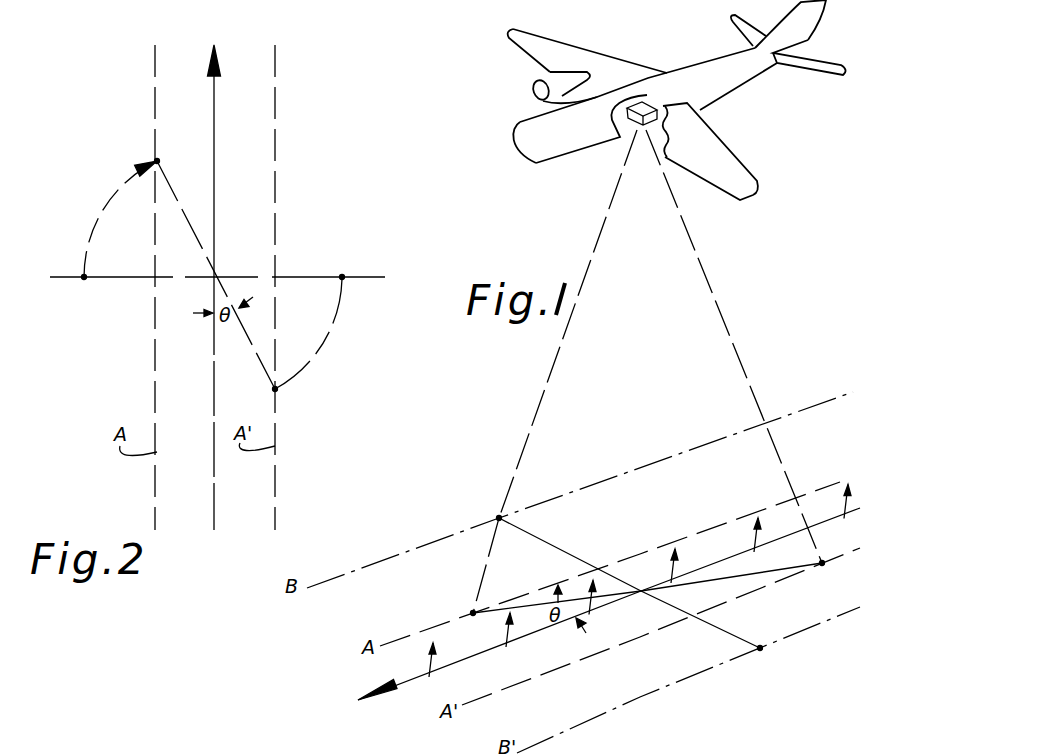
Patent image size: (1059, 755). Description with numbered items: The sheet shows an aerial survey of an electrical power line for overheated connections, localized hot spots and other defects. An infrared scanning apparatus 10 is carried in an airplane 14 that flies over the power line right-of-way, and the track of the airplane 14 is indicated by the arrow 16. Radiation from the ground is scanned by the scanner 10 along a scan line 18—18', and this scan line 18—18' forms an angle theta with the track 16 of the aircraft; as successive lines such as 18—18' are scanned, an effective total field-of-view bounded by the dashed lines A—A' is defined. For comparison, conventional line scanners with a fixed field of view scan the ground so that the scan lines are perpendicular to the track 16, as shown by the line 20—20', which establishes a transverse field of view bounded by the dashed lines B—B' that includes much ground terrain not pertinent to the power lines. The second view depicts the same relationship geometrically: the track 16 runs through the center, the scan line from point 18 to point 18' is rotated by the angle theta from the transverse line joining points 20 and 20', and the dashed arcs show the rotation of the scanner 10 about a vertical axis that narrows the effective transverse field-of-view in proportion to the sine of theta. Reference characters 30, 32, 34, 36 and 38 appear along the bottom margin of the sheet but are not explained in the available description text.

In FIG. 1, the infrared scanning apparatus 10 is at (627, 114).
In FIG. 1, the airplane 14 is at (663, 72).
In FIG. 2, the track of the airplane 16 is at (214, 95).
In FIG. 1, the track of the airplane 16 is at (397, 686).
In FIG. 2, the scan line end point 18 is at (130, 121).
In FIG. 1, the scan line end point 18 is at (442, 600).
In FIG. 2, the scan line end point 18' is at (310, 410).
In FIG. 1, the scan line end point 18' is at (820, 584).
In FIG. 2, the transverse scan line end point 20 is at (60, 297).
In FIG. 1, the transverse scan line end point 20 is at (467, 489).
In FIG. 2, the transverse scan line end point 20' is at (368, 256).
In FIG. 1, the transverse scan line end point 20' is at (785, 664).
In FIG. 1, the component 30 is at (107, 750).
In FIG. 1, the component 32 is at (738, 753).
In FIG. 1, the component 34 is at (300, 750).
In FIG. 1, the component 36 is at (412, 750).
In FIG. 1, the component 38 is at (650, 750).